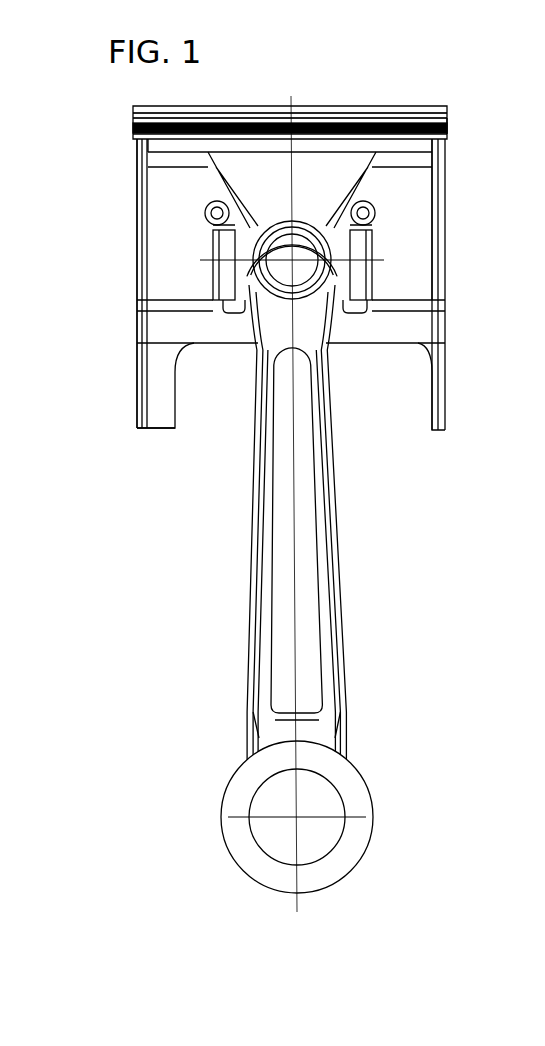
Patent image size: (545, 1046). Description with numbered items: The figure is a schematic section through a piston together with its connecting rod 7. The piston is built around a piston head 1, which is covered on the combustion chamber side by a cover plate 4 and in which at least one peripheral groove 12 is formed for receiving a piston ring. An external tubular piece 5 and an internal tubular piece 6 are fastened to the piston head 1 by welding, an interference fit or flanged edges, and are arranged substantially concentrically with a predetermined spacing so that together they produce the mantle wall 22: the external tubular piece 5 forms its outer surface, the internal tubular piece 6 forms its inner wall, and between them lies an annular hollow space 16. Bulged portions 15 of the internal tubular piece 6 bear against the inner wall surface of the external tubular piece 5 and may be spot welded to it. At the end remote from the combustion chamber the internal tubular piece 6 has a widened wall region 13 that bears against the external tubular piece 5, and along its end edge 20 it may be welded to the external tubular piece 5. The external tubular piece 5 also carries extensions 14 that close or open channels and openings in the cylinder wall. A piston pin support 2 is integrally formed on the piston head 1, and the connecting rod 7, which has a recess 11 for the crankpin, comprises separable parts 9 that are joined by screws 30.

The piston head 1 is at (442, 101).
The piston pin support 2 is at (367, 178).
The cover plate 4 is at (296, 106).
The external tubular piece 5 is at (447, 256).
The internal tubular piece 6 is at (431, 270).
The connecting rod 7 is at (326, 540).
The connecting rod part 9 is at (213, 252).
The recess 11 is at (325, 797).
The peripheral groove 12 is at (136, 126).
The widened wall region 13 is at (148, 326).
The extensions 14 is at (157, 431).
The bulged portions 15 is at (447, 207).
The annular hollow space 16 is at (137, 183).
The end edge 20 is at (446, 347).
The mantle wall 22 is at (138, 276).
The screws 30 is at (236, 314).